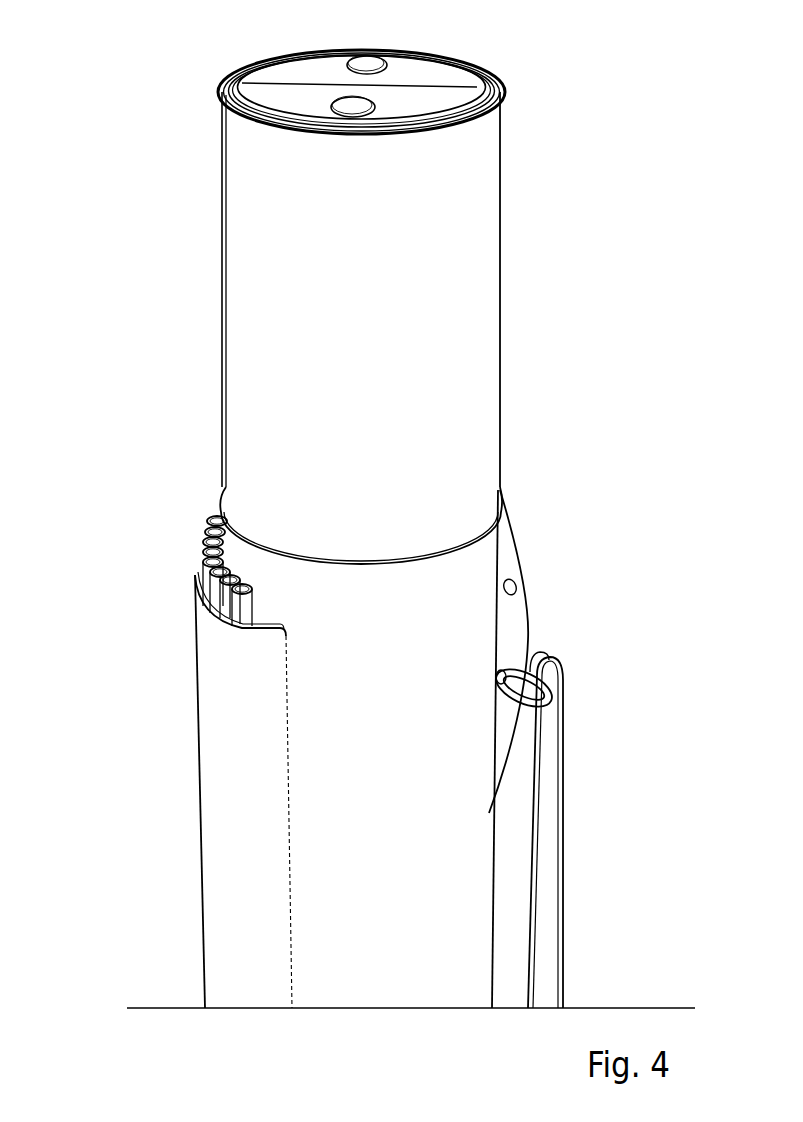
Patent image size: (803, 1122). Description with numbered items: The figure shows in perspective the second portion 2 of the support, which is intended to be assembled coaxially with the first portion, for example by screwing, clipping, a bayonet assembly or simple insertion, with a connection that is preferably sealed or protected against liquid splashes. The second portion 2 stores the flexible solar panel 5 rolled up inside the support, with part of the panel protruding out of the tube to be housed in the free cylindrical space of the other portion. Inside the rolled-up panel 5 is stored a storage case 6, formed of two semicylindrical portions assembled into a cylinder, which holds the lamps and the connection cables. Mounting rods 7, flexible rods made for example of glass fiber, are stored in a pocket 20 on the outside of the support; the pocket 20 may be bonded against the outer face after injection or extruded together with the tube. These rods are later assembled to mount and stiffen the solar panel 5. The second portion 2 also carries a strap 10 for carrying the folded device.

The second portion of the support 2 is at (290, 905).
The flexible solar panel 5 is at (482, 298).
The storage case 6 is at (408, 70).
The mounting rods 7 is at (207, 577).
The strap 10 is at (555, 690).
The pocket 20 is at (212, 665).